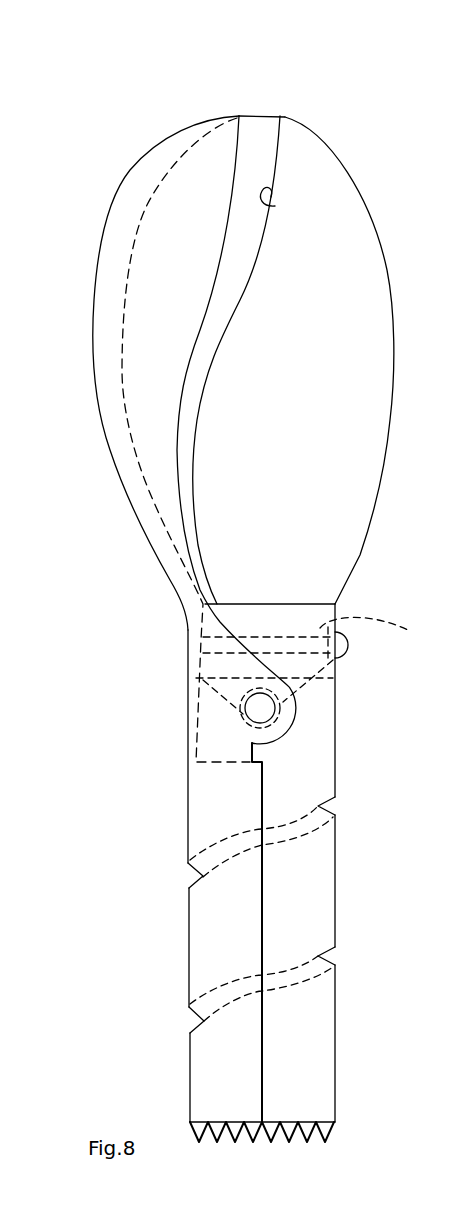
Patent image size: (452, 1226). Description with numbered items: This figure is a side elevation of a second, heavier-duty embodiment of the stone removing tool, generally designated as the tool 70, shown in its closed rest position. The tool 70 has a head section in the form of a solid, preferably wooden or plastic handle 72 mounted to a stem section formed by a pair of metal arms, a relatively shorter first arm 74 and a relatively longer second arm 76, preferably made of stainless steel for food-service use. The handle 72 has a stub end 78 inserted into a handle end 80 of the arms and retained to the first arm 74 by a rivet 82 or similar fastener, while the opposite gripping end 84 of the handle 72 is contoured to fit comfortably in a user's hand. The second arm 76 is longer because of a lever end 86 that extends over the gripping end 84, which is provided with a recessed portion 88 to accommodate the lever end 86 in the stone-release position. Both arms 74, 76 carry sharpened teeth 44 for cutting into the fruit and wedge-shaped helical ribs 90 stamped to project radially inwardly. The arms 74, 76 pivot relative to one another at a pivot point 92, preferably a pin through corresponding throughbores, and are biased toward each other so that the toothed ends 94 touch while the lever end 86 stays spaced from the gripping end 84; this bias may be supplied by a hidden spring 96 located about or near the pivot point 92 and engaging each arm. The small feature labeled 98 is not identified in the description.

The tool 70 is at (92, 110).
The handle 72 is at (363, 333).
The first arm 74 is at (325, 743).
The second arm 76 is at (203, 803).
The stub end 78 is at (377, 638).
The handle end 80 is at (338, 610).
The rivet 82 is at (340, 655).
The gripping end 84 is at (312, 145).
The lever end 86 is at (107, 275).
The recessed portion 88 is at (260, 140).
The helical ribs 90 is at (332, 950).
The pivot point 92 is at (263, 715).
The toothed ends 94 is at (203, 1105).
The spring 96 is at (185, 703).
The aperture 98 is at (275, 206).
The sharpened teeth 44 is at (218, 1140).